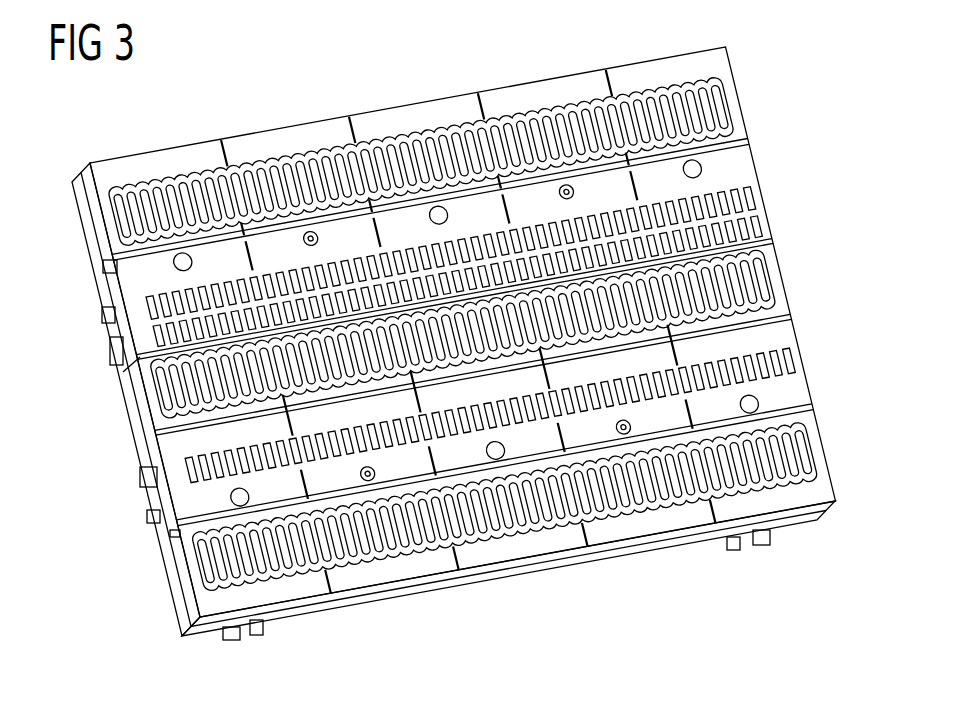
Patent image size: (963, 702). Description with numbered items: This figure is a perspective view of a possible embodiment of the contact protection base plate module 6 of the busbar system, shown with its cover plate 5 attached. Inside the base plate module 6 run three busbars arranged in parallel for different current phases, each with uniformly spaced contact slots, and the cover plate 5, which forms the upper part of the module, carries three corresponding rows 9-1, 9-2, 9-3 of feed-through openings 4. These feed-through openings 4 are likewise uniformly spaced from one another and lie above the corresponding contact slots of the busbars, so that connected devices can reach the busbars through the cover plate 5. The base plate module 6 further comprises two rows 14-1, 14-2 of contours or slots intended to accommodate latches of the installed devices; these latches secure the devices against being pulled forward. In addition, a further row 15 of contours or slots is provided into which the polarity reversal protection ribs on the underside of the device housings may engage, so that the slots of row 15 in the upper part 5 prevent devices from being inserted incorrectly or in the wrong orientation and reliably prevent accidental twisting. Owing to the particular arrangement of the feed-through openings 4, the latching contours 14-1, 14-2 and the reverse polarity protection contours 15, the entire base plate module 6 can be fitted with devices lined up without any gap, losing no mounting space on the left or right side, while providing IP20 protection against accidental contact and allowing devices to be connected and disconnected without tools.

The feed-through openings 4 is at (121, 214).
The cover plate 5 is at (805, 399).
The contact protection base plate module 6 is at (768, 80).
The first row of feed-through openings 9-1 is at (723, 105).
The second row of feed-through openings 9-2 is at (770, 270).
The third row of feed-through openings 9-3 is at (812, 448).
The first row of latching contours or slots 14-1 is at (750, 195).
The second row of latching contours or slots 14-2 is at (790, 357).
The row of polarity reversal protection contours or slots 15 is at (150, 325).